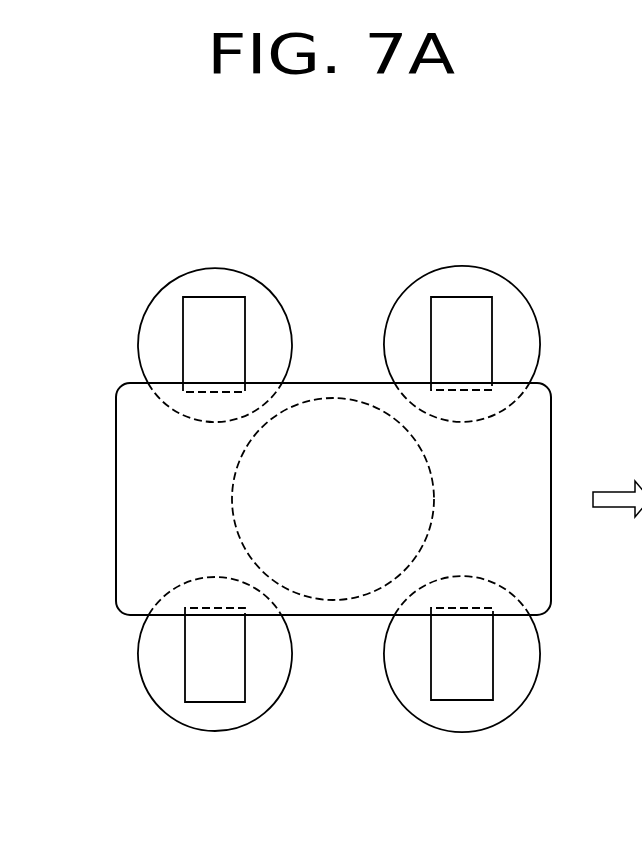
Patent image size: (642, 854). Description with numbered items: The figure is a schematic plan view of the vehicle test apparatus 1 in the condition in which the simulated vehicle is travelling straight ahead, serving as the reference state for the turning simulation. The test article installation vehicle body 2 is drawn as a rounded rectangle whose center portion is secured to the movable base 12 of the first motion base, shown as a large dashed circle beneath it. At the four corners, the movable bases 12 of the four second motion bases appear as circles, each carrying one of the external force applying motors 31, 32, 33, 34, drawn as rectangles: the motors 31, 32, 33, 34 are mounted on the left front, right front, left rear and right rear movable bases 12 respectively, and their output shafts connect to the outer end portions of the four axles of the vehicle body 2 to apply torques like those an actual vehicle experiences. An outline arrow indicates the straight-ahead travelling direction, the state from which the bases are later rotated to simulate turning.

The vehicle test apparatus 1 is at (331, 263).
The test article installation vehicle body 2 is at (350, 383).
The movable base 12 is at (435, 505).
The external force applying motor 31 is at (473, 337).
The external force applying motor 32 is at (475, 667).
The external force applying motor 33 is at (203, 337).
The external force applying motor 34 is at (200, 660).